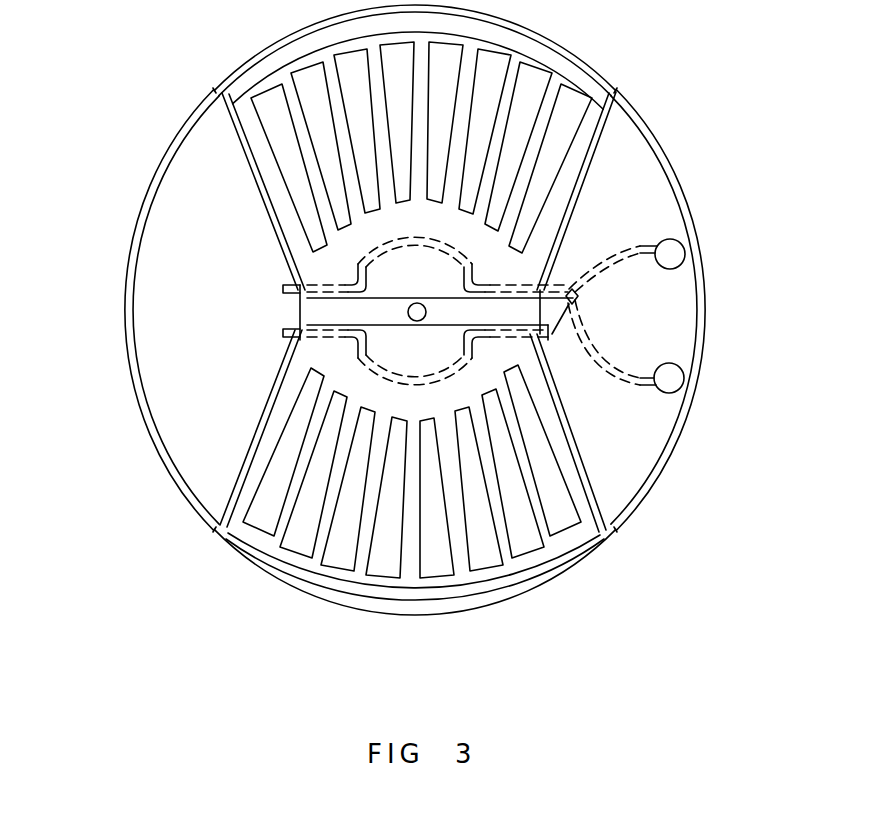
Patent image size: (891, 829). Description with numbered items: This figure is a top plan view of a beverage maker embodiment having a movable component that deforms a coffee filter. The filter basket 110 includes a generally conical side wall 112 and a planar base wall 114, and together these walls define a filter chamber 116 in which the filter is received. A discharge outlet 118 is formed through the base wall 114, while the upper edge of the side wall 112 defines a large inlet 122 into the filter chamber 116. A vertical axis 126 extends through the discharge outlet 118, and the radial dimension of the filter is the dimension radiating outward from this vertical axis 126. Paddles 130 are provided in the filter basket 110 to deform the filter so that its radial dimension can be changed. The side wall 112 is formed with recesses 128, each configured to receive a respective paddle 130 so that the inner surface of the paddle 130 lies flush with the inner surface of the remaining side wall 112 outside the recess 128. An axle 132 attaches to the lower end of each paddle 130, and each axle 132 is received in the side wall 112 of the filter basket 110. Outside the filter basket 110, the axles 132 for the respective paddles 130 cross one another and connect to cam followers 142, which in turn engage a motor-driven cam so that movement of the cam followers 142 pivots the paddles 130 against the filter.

The filter basket 110 is at (766, 138).
The side wall 112 is at (642, 123).
The base wall 114 is at (325, 312).
The filter chamber 116 is at (205, 272).
The discharge outlet 118 is at (428, 313).
The inlet 122 is at (232, 215).
The vertical axis 126 is at (404, 319).
The recess 128 is at (613, 537).
The paddle 130 is at (287, 82).
The axle 132 is at (570, 290).
The cam follower 142 is at (686, 258).